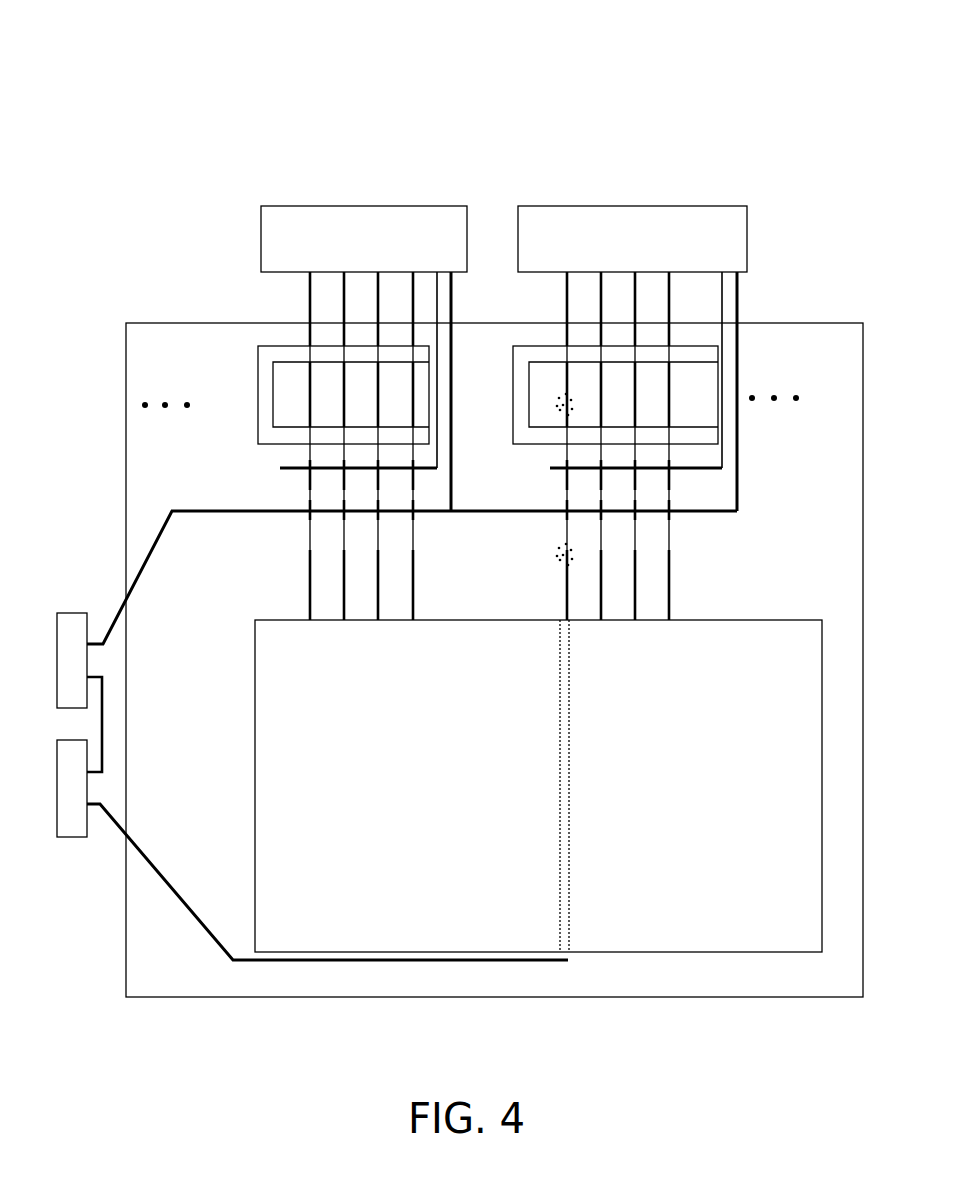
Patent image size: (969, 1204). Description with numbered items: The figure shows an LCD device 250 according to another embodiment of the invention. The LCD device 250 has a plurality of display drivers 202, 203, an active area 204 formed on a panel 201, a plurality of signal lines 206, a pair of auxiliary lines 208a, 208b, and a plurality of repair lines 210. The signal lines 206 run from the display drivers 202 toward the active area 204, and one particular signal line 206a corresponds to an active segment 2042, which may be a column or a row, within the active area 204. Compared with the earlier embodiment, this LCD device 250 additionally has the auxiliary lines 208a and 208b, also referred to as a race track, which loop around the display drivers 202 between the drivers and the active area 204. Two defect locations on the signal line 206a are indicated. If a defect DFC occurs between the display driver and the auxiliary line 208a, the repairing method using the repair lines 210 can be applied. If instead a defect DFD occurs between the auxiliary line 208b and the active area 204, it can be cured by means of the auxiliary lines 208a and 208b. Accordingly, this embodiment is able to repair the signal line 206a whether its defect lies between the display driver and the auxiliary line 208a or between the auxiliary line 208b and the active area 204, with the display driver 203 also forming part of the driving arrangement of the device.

The LCD device 250 is at (205, 31).
The panel 201 is at (822, 323).
The display driver 202 is at (400, 206).
The display driver 203 is at (56, 657).
The active area 204 is at (787, 669).
The active segment 2042 is at (570, 812).
The signal lines 206 is at (310, 318).
The signal line 206a is at (567, 320).
The auxiliary line 208a is at (287, 468).
The auxiliary line 208b is at (452, 482).
The repair lines 210 is at (258, 398).
The defect DFD is at (563, 405).
The defect DFC is at (565, 555).